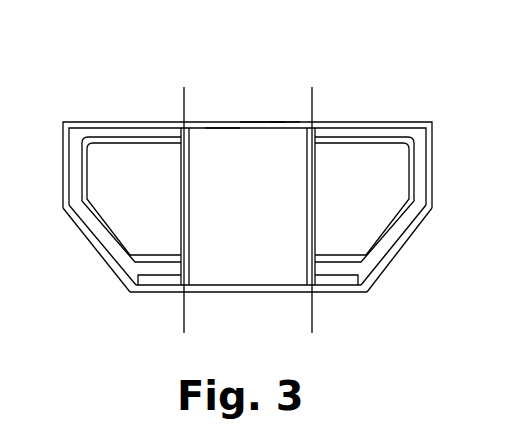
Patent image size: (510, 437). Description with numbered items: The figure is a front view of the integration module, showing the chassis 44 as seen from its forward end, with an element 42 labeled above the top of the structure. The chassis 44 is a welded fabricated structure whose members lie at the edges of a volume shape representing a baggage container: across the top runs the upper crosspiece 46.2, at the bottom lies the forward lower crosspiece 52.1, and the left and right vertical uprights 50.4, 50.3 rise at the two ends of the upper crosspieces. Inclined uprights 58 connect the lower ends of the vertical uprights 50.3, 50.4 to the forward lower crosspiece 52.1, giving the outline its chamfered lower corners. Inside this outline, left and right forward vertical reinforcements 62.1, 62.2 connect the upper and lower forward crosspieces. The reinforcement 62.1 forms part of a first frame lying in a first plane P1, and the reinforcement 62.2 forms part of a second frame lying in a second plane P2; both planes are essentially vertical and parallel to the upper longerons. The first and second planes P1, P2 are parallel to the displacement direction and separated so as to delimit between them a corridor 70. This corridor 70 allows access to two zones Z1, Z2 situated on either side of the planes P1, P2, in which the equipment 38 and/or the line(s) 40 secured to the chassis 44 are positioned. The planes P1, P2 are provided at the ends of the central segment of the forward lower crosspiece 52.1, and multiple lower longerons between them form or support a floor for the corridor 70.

The equipment 38 is at (131, 168).
The line 40 is at (126, 142).
The top wall 42 is at (262, 80).
The chassis 44 is at (284, 92).
The rear upper crosspiece 46.2 is at (224, 126).
The vertical upright 50.3 is at (428, 150).
The vertical upright 50.4 is at (68, 150).
The forward lower crosspiece 52.1 is at (250, 290).
The inclined upright 58 is at (100, 243).
The forward vertical reinforcement 62.1 is at (189, 202).
The forward vertical reinforcement 62.2 is at (307, 163).
The corridor 70 is at (248, 206).
The zone Z1 is at (135, 200).
The zone Z2 is at (365, 200).
The first plane P1 is at (183, 310).
The second plane P2 is at (312, 305).